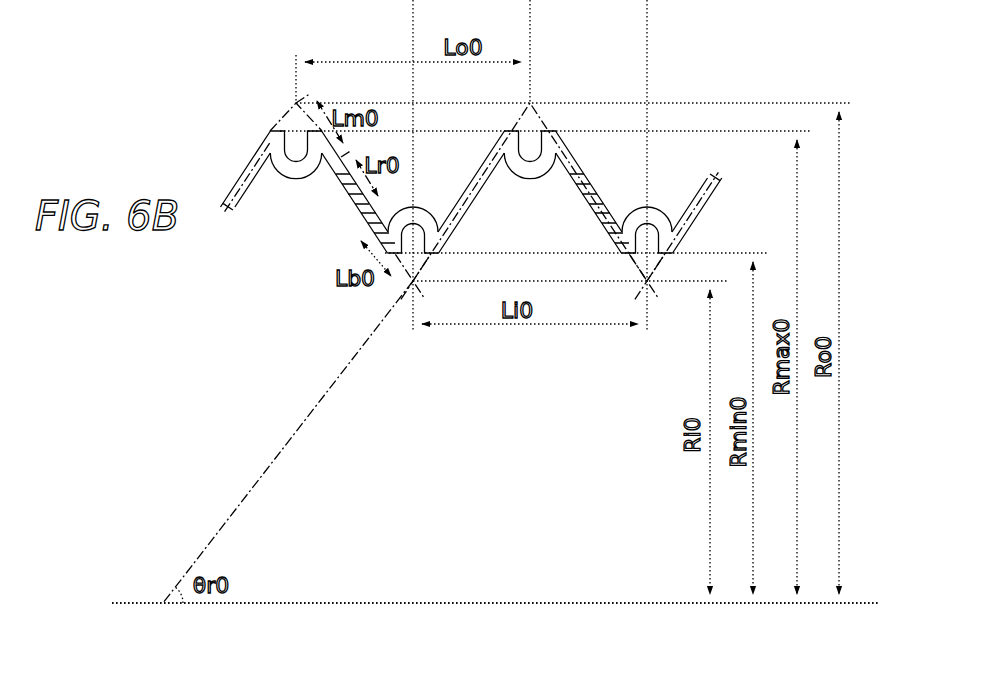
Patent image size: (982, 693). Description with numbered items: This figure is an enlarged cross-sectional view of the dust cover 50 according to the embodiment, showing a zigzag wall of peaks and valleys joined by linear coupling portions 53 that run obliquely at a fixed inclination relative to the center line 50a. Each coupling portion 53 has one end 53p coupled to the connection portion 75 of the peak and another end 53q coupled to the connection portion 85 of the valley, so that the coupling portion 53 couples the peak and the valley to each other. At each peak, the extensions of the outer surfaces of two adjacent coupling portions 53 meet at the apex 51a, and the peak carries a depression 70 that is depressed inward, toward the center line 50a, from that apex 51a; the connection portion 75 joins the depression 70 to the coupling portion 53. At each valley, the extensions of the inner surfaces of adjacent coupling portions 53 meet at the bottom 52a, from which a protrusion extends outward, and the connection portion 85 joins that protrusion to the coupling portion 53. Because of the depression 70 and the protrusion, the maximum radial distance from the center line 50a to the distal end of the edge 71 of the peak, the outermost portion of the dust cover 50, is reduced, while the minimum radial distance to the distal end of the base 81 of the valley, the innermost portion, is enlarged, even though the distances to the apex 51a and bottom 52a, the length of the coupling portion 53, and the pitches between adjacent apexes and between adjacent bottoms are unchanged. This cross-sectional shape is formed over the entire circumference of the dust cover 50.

The dust cover 50 is at (203, 76).
The center line 50a is at (470, 600).
The apex 51a is at (294, 100).
The bottom 52a is at (651, 288).
The coupling portion 53 is at (244, 168).
The one end of the coupling portion 53p is at (340, 190).
The another end of the coupling portion 53q is at (364, 222).
The depression 70 is at (289, 120).
The edge of the peak 71 is at (509, 128).
The connection portion 75 is at (313, 174).
The base of the valley 81 is at (628, 257).
The connection portion 85 is at (352, 240).